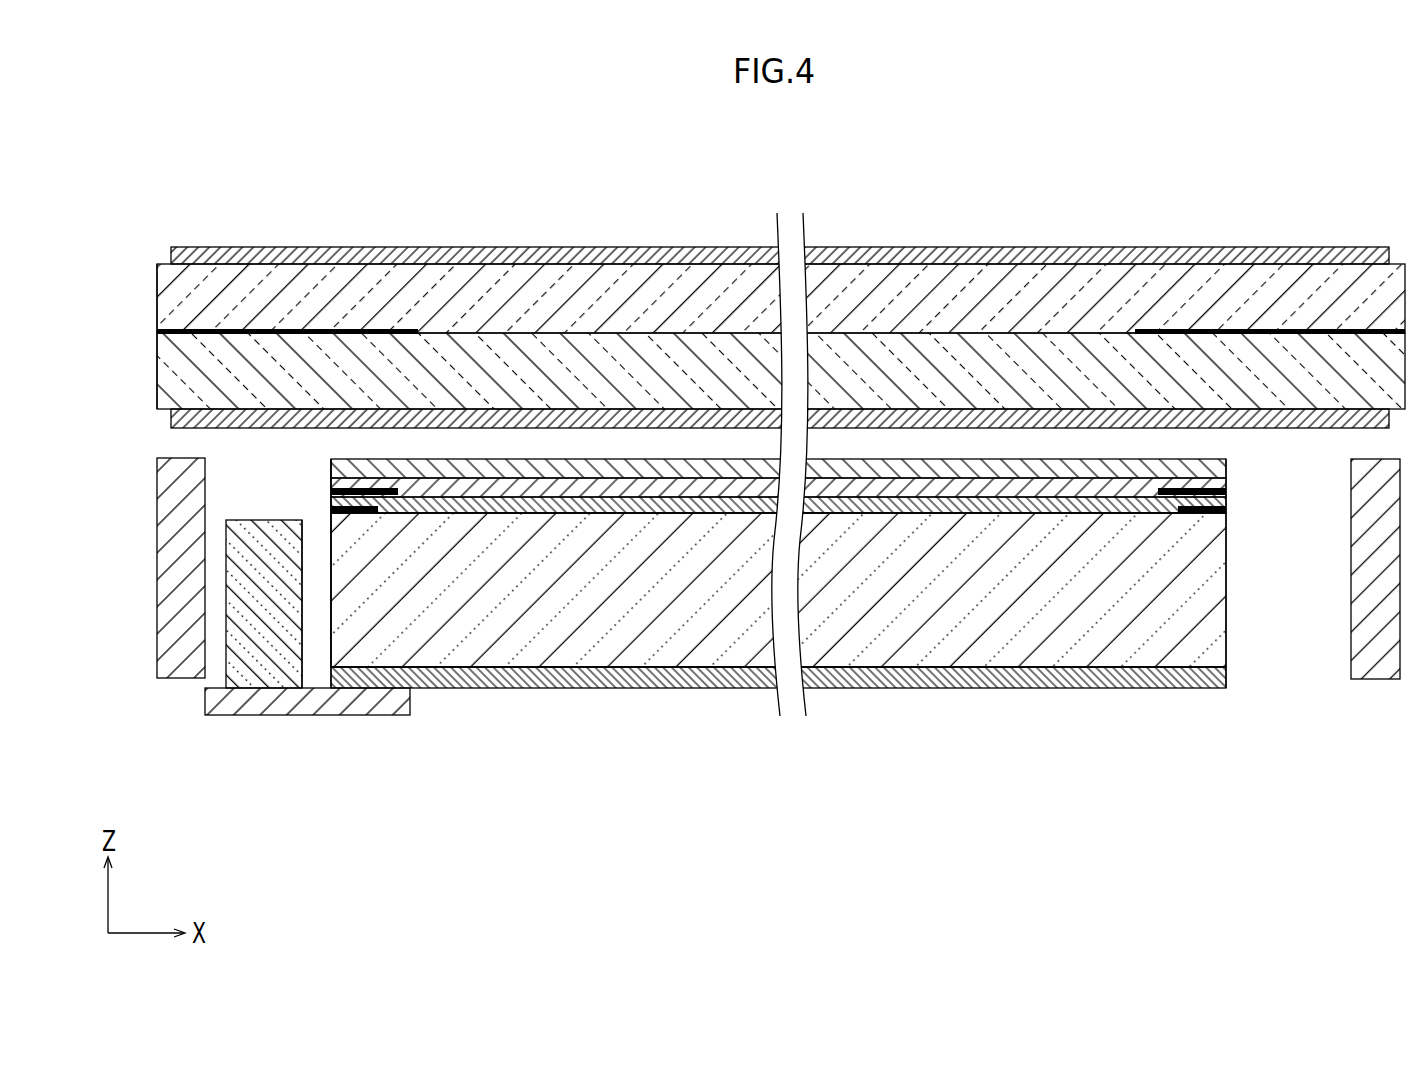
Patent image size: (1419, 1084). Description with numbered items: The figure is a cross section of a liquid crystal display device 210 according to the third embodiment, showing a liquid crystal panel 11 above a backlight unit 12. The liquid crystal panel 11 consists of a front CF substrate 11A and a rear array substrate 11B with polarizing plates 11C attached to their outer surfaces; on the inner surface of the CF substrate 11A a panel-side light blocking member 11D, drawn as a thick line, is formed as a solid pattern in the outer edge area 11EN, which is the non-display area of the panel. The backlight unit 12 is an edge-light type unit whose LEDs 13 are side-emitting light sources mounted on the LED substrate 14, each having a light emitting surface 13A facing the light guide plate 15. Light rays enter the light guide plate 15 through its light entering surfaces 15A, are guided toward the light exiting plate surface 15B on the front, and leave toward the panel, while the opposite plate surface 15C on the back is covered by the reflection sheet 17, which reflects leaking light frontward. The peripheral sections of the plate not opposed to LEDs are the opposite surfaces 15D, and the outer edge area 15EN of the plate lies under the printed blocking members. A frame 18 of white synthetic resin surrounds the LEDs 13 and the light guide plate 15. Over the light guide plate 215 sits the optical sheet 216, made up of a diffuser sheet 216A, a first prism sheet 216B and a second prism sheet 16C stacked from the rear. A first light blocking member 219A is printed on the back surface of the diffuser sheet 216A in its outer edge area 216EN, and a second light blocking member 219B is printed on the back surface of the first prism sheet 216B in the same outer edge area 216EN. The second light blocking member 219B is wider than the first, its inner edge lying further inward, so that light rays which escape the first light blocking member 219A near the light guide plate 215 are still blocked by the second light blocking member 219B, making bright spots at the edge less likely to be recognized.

The liquid crystal display device 210 is at (1164, 141).
The liquid crystal panel 11 is at (903, 247).
The CF substrate 11A is at (508, 282).
The array substrate 11B is at (552, 360).
The polarizing plates 11C is at (662, 410).
The panel-side light blocking member 11D is at (268, 326).
The outer edge area 11EN is at (205, 278).
The backlight unit 12 is at (1072, 724).
The LEDs 13 is at (262, 664).
The light emitting surface 13A is at (303, 640).
The LED substrate 14 is at (206, 676).
The light guide plate 15 is at (792, 489).
The light entering surfaces 15A is at (332, 601).
The light exiting plate surface 15B is at (680, 508).
The opposite plate surface 15C is at (625, 670).
The opposite surfaces 15D is at (1226, 592).
The outer edge area 15EN is at (355, 587).
The reflection sheet 17 is at (720, 680).
The frame 18 is at (1376, 660).
The light guide plate 215 is at (577, 623).
The optical sheet 216 is at (993, 742).
The diffuser sheet 216A is at (843, 508).
The first prism sheet 216B is at (905, 490).
The second prism sheet 16C is at (963, 470).
The outer edge area 216EN is at (372, 480).
The first light blocking member 219A is at (358, 510).
The second light blocking member 219B is at (391, 490).